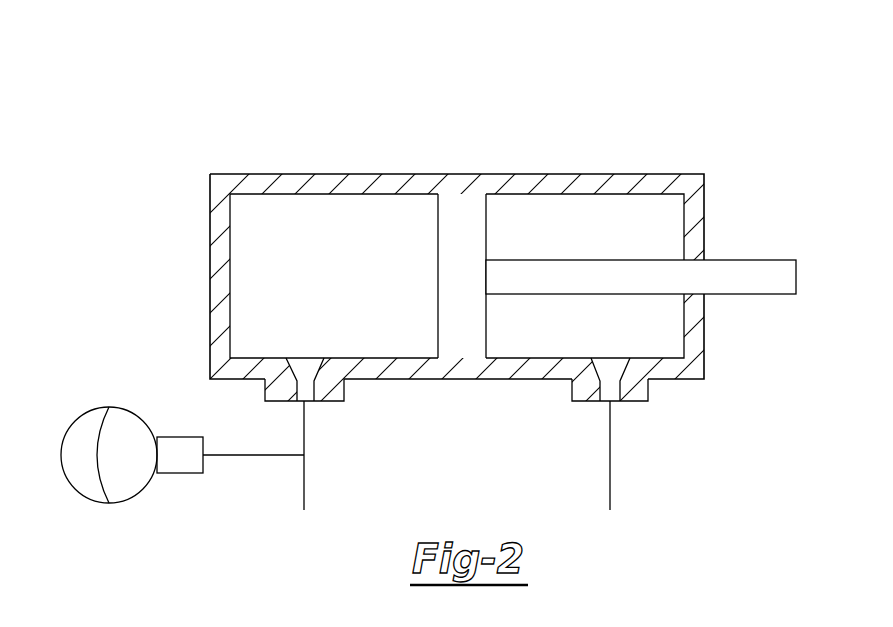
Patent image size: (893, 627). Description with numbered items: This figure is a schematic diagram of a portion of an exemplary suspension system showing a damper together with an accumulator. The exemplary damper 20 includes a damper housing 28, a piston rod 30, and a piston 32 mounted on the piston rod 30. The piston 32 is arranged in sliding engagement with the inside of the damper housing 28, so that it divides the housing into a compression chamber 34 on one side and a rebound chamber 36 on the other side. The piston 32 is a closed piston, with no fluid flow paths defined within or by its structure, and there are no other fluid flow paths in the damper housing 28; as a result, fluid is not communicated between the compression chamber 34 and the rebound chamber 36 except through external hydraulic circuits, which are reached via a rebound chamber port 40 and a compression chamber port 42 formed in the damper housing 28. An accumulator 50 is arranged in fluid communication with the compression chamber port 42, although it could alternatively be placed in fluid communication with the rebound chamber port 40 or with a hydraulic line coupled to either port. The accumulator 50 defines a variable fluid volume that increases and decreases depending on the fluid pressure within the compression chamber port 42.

The damper 20 is at (186, 121).
The damper housing 28 is at (283, 174).
The piston rod 30 is at (755, 260).
The piston 32 is at (460, 212).
The compression chamber 34 is at (338, 218).
The rebound chamber 36 is at (575, 217).
The rebound chamber port 40 is at (627, 385).
The compression chamber port 42 is at (280, 373).
The accumulator 50 is at (115, 479).